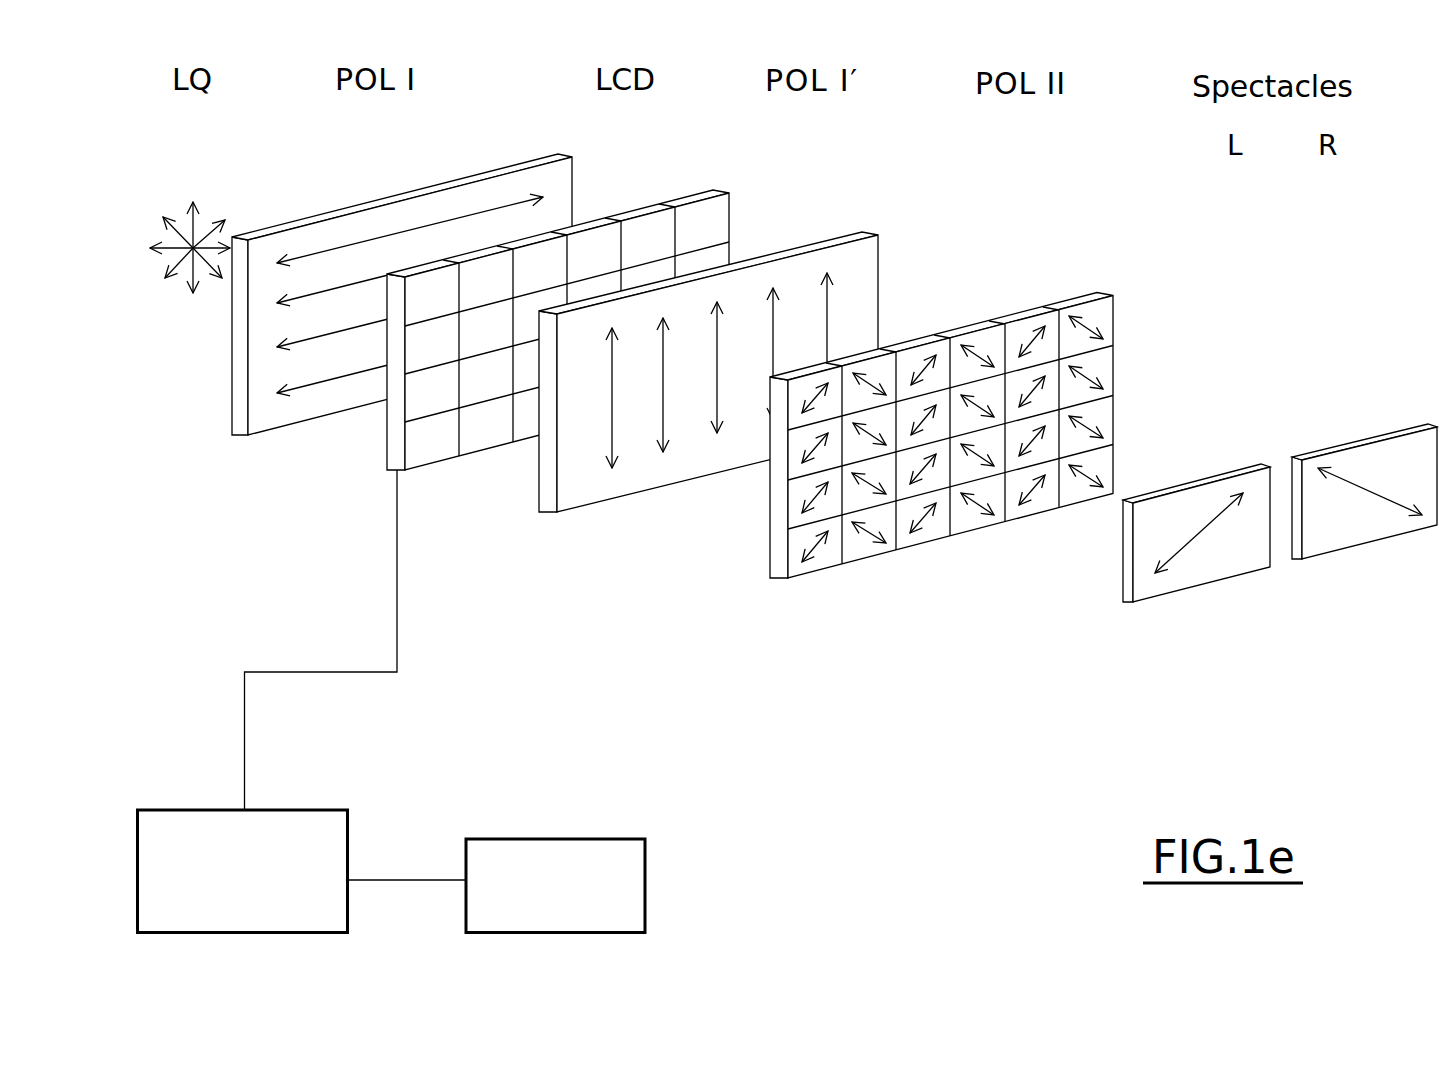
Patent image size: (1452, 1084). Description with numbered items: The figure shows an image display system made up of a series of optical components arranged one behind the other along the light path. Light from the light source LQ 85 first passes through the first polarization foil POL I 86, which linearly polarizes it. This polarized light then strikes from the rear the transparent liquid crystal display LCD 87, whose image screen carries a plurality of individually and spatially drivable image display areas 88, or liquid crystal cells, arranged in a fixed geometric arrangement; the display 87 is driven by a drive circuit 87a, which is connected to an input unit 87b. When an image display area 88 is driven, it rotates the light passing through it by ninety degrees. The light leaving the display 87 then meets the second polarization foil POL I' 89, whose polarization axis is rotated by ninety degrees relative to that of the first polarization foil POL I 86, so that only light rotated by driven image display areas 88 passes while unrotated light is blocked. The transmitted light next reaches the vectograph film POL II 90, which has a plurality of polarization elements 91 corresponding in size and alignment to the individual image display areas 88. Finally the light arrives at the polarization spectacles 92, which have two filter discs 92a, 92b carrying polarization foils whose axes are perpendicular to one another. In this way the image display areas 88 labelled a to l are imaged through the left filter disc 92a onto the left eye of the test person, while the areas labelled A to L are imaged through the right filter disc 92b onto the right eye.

The light source LQ 85 is at (187, 275).
The first polarization foil POL I 86 is at (263, 417).
The transparent liquid crystal display LCD 87 is at (357, 442).
The drive circuit 87a is at (307, 824).
The input unit 87b is at (560, 857).
The image display areas 88 is at (440, 455).
The second polarization foil POL I' 89 is at (568, 490).
The vectograph film POL II 90 is at (750, 555).
The polarization elements 91 is at (818, 565).
The polarization spectacles 92 is at (1222, 547).
The left filter disc 92a is at (1182, 577).
The right filter disc 92b is at (1348, 528).